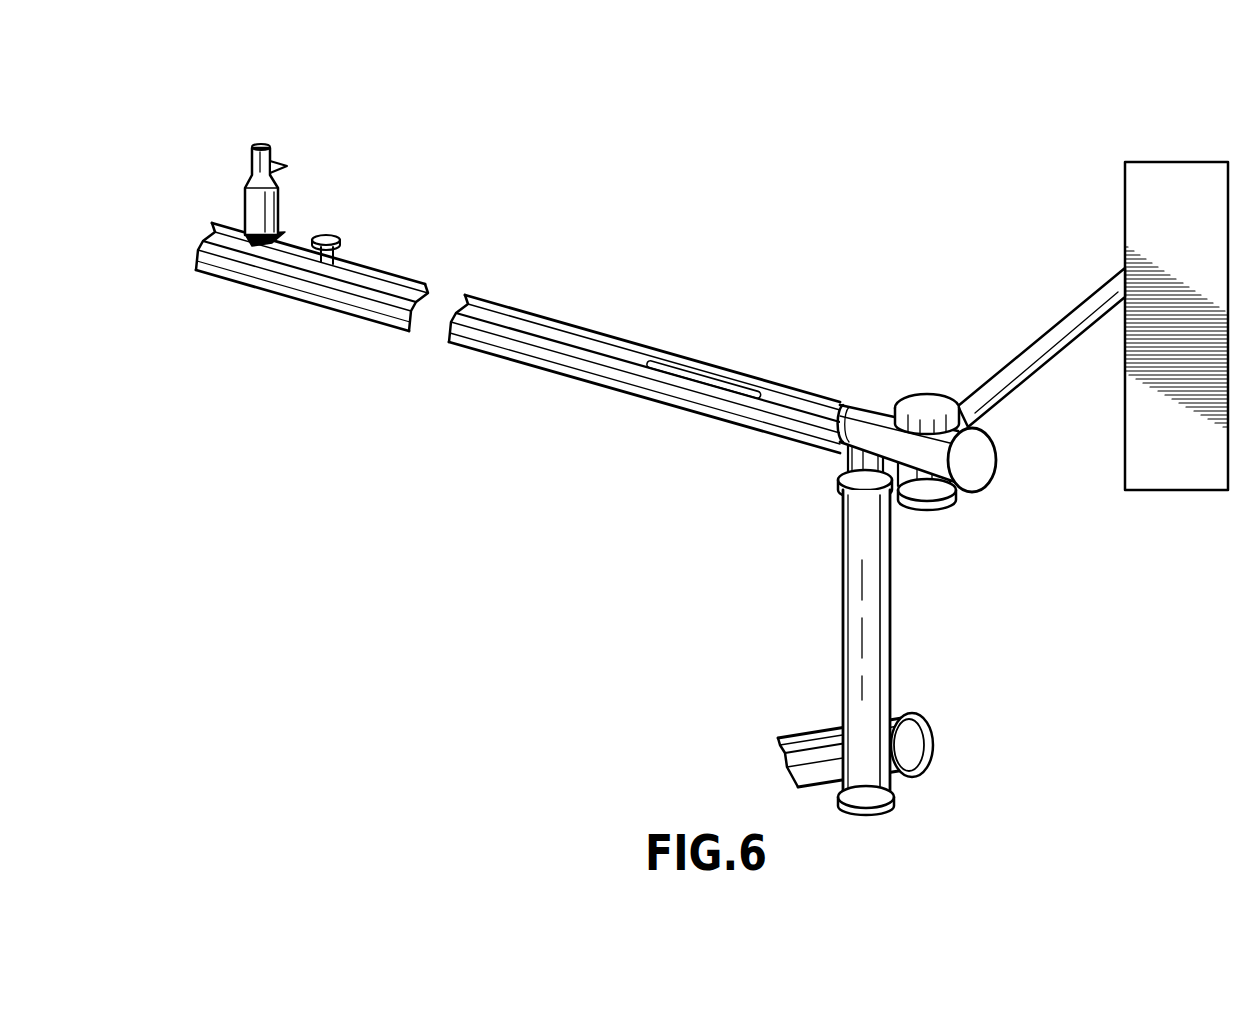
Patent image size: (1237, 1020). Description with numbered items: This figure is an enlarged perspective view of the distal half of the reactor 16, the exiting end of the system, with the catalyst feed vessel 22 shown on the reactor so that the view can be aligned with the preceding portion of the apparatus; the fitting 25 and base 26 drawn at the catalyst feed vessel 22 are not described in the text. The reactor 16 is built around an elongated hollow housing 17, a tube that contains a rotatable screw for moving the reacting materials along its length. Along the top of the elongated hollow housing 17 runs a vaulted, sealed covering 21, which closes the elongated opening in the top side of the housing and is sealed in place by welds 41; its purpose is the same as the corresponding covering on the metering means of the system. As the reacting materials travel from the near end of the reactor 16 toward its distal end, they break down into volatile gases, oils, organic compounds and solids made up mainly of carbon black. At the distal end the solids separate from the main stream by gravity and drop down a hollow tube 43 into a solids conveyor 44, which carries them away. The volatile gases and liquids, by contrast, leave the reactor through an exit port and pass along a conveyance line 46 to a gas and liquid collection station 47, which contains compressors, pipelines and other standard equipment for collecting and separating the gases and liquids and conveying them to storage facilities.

The reactor 16 is at (541, 252).
The elongated hollow housing 17 is at (357, 303).
The vaulted, sealed covering 21 is at (388, 283).
The catalyst feed vessel 22 is at (242, 207).
The nozzle tip 25 is at (285, 165).
The fitting base 26 is at (283, 235).
The welds 41 is at (653, 363).
The hollow tube 43 is at (883, 629).
The solids conveyor 44 is at (807, 730).
The conveyance line 46 is at (1032, 347).
The gas and liquid collection station 47 is at (1132, 187).